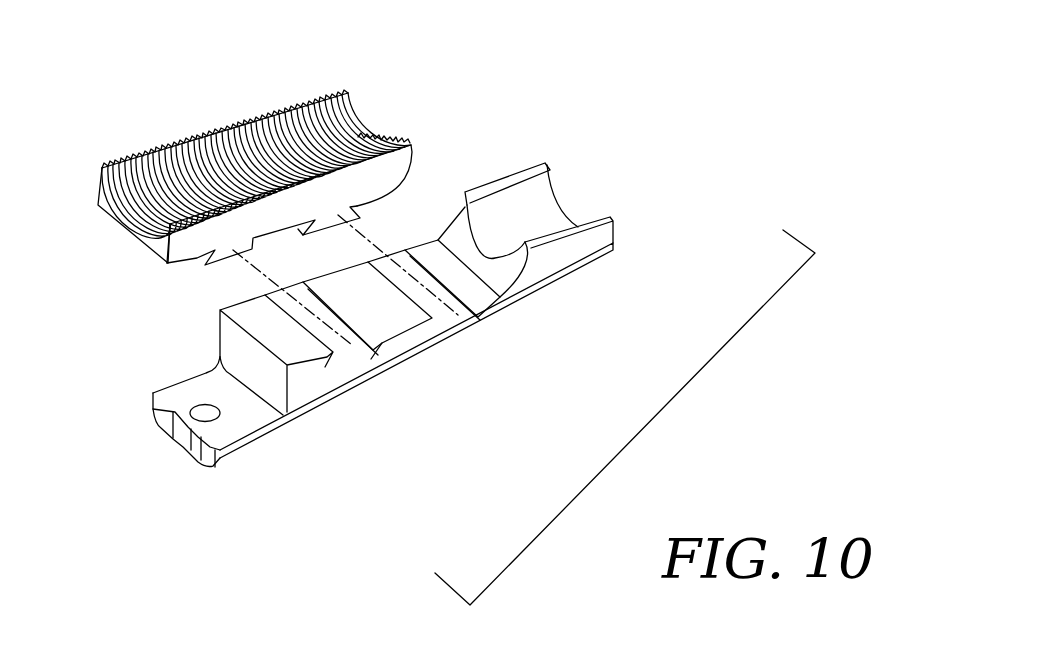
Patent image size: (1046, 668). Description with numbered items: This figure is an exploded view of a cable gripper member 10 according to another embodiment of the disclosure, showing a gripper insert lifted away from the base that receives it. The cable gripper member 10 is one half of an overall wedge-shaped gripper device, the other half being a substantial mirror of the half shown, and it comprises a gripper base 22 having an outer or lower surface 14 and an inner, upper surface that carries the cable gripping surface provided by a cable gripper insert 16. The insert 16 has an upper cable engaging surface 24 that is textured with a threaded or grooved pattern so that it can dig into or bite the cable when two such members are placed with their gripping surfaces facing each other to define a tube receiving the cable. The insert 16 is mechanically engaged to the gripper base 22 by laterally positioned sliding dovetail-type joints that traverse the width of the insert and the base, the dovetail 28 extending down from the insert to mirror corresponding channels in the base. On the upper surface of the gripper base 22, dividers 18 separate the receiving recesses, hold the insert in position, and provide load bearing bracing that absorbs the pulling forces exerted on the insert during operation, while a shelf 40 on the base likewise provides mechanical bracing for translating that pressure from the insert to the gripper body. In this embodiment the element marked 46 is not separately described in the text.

The cable gripper member 10 is at (652, 431).
The lower surface 14 is at (246, 452).
The cable gripper insert 16 is at (250, 183).
The dividers 18 is at (395, 324).
The gripper base 22 is at (383, 391).
The cable engaging surface 24 is at (127, 197).
The dovetail 28 is at (229, 257).
The shelf 40 is at (540, 255).
The cradle 46 is at (537, 229).